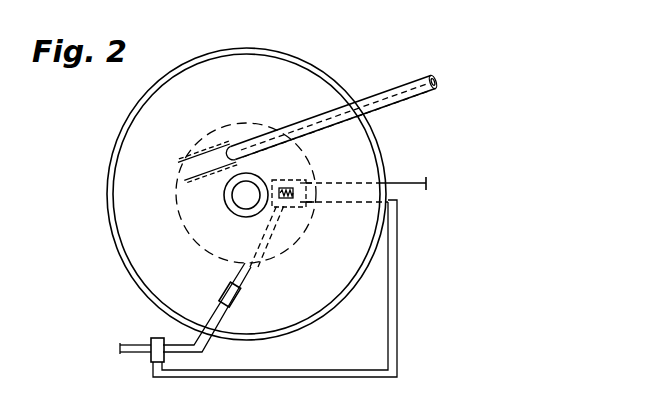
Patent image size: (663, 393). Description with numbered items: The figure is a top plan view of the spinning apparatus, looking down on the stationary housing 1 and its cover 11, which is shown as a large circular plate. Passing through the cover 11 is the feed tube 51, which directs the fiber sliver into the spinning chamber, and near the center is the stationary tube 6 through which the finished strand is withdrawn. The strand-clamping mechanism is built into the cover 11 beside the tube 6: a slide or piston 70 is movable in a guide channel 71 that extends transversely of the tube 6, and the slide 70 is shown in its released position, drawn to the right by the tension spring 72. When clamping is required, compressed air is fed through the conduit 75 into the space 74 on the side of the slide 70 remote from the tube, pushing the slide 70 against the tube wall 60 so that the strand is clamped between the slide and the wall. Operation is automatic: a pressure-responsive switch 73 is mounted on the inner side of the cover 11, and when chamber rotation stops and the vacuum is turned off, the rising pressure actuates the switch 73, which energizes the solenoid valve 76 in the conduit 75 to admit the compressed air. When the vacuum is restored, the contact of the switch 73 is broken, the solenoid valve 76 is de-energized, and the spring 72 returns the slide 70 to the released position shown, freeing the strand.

The stationary housing 1 is at (117, 152).
The stationary tube 6 is at (224, 198).
The cover 11 is at (137, 245).
The feed tube 51 is at (380, 92).
The tube wall 60 is at (231, 211).
The slide 70 is at (290, 197).
The guide channel 71 is at (251, 174).
The tension spring 72 is at (286, 186).
The pressure-responsive switch 73 is at (312, 178).
The space 74 is at (310, 201).
The conduit 75 is at (252, 268).
The solenoid valve 76 is at (152, 340).